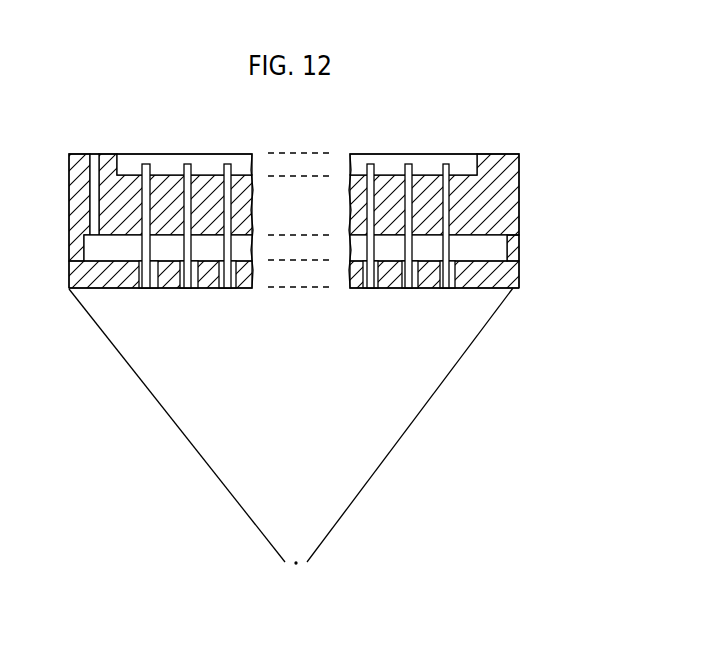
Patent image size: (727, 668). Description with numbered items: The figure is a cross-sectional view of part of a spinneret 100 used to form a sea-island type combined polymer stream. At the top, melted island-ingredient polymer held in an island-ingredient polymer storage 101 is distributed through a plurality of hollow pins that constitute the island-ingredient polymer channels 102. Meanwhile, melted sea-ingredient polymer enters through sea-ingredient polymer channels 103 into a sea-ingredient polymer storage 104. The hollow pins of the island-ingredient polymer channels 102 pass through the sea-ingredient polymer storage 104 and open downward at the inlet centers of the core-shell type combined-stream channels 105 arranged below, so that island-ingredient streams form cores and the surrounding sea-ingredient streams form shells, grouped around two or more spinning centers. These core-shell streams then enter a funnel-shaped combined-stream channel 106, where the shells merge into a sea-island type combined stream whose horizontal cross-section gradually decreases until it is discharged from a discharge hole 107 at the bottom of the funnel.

The spinneret 100 is at (556, 123).
The island-ingredient polymer storage 101 is at (455, 162).
The island-ingredient polymer channels 102 is at (447, 193).
The sea-ingredient polymer channels 103 is at (94, 156).
The sea-ingredient polymer storage 104 is at (497, 245).
The core-shell type combined-stream channels 105 is at (455, 277).
The combined-stream channel 106 is at (466, 327).
The discharge hole 107 is at (296, 565).